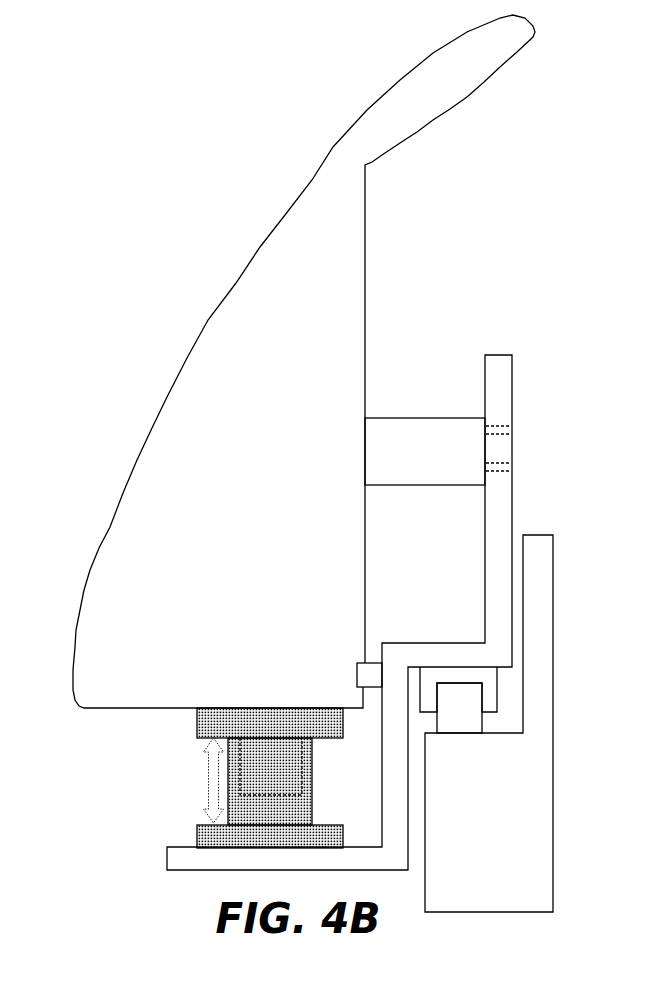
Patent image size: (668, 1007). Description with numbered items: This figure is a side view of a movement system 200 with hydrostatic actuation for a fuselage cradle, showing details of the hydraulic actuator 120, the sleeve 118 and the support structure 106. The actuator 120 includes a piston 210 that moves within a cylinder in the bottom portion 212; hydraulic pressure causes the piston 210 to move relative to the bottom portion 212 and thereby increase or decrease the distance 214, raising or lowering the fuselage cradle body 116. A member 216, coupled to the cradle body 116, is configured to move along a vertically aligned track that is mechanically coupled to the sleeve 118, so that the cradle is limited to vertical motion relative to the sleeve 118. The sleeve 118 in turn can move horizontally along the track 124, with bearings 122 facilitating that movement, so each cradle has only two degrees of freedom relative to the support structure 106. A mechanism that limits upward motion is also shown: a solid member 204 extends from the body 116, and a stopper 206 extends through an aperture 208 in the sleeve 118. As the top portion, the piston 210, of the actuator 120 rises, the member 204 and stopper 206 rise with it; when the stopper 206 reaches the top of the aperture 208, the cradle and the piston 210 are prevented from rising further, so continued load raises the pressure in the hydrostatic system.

The fin assembly 200 is at (162, 134).
The fuselage cradle body 116 is at (95, 693).
The sleeve 118 is at (503, 372).
The solid member 204 is at (410, 480).
The stopper 206 is at (507, 453).
The aperture 208 is at (500, 422).
The member 216 is at (370, 663).
The bearings 122 is at (483, 677).
The track 124 is at (468, 725).
The hydraulic actuator 120 is at (150, 780).
The piston 210 is at (290, 734).
The bottom portion 212 is at (290, 848).
The distance 214 is at (194, 780).
The support structure 106 is at (496, 891).